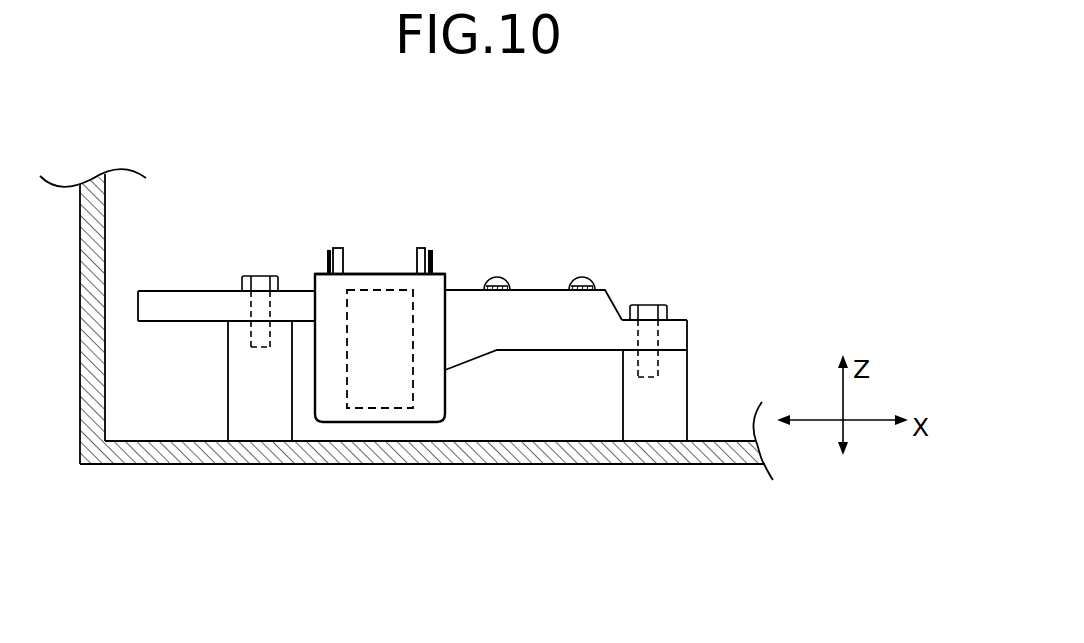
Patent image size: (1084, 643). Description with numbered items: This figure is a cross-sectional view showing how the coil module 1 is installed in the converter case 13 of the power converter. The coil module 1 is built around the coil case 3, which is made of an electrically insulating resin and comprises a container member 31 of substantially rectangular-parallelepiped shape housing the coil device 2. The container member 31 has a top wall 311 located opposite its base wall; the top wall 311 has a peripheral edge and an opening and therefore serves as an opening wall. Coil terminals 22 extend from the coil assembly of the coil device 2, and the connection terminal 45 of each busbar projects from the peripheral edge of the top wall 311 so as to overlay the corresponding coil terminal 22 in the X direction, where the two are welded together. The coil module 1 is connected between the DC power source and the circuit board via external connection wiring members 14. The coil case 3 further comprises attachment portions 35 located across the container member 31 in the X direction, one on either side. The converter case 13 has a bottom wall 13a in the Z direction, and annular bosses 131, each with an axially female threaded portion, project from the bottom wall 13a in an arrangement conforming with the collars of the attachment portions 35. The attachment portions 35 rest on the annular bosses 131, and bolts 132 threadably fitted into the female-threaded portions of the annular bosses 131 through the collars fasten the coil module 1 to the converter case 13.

The coil module 1 is at (521, 228).
The coil device 2 is at (390, 392).
The coil case 3 is at (332, 410).
The top wall 311 is at (378, 272).
The coil terminal 22 is at (424, 272).
The connection terminal 45 is at (433, 253).
The external connection wiring member 14 is at (592, 280).
The container member 31 is at (430, 410).
The attachment portion 35 is at (232, 305).
The bolt 132 is at (263, 277).
The annular boss 131 is at (253, 422).
The converter case 13 is at (578, 468).
The bottom wall 13a is at (522, 441).